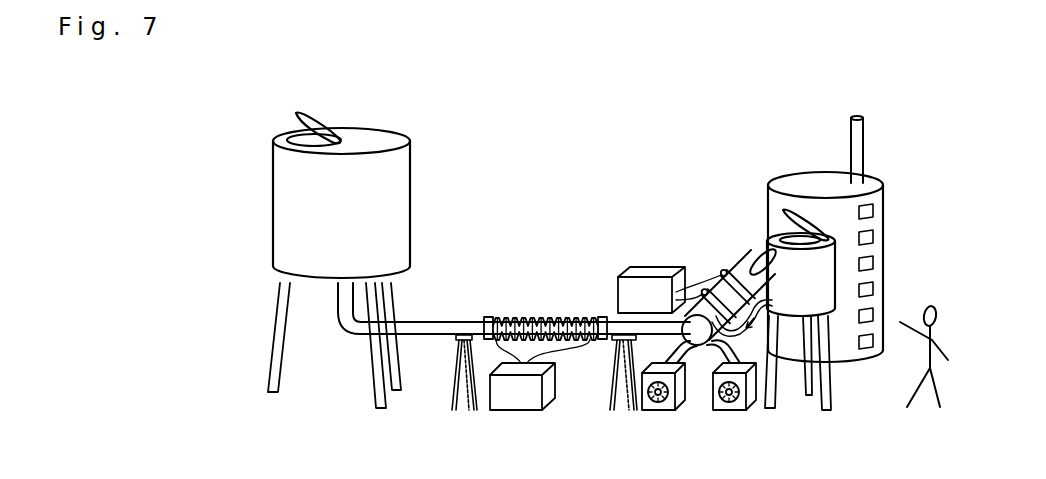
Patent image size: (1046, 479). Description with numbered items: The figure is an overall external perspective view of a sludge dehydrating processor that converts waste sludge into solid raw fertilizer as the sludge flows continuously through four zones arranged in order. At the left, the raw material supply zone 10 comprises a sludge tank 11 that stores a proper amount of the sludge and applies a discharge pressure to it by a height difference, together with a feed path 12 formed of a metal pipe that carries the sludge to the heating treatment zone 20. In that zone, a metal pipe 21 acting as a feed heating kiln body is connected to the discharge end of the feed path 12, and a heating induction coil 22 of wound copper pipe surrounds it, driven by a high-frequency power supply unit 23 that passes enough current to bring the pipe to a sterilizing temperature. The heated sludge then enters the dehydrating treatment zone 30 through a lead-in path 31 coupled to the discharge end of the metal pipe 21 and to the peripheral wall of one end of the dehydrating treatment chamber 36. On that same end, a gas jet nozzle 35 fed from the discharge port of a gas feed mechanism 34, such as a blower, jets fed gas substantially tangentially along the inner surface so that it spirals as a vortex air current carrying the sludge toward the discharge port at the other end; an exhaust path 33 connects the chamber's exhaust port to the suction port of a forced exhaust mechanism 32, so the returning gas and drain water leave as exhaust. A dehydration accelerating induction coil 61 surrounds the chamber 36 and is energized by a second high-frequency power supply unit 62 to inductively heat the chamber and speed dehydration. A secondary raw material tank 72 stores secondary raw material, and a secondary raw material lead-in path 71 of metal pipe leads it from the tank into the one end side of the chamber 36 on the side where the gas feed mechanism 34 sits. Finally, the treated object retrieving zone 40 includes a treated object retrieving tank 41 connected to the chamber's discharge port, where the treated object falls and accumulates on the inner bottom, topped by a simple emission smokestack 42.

The raw material supply zone 10 is at (371, 260).
The sludge tank 11 is at (411, 218).
The feed path 12 is at (432, 320).
The heating treatment zone 20 is at (545, 327).
The metal pipe 21 is at (518, 318).
The heating induction coil 22 is at (577, 318).
The high-frequency power supply unit 23 is at (529, 412).
The dehydrating treatment zone 30 is at (691, 311).
The lead-in path for the object to be treated 31 is at (646, 338).
The forced exhaust mechanism 32 is at (651, 412).
The exhaust path 33 is at (676, 365).
The gas feed mechanism 34 is at (743, 412).
The gas jet nozzle 35 is at (717, 366).
The dehydrating treatment chamber 36 is at (712, 278).
The treated object retrieving zone 40 is at (834, 279).
The treated object retrieving tank 41 is at (884, 238).
The emission smokestack 42 is at (863, 152).
The dehydration accelerating induction coil 61 is at (732, 272).
The high-frequency power supply unit 62 is at (643, 276).
The secondary raw material lead-in path 71 is at (778, 390).
The secondary raw material tank 72 is at (838, 320).